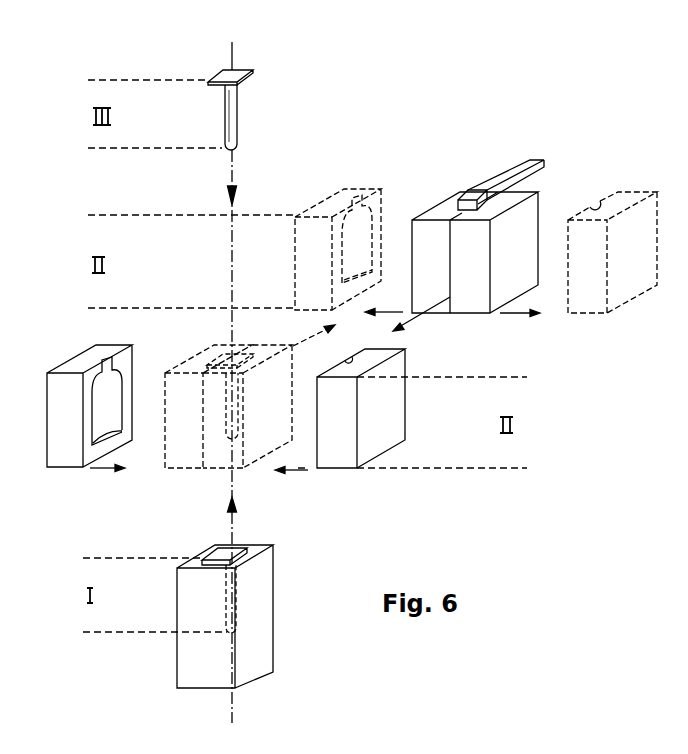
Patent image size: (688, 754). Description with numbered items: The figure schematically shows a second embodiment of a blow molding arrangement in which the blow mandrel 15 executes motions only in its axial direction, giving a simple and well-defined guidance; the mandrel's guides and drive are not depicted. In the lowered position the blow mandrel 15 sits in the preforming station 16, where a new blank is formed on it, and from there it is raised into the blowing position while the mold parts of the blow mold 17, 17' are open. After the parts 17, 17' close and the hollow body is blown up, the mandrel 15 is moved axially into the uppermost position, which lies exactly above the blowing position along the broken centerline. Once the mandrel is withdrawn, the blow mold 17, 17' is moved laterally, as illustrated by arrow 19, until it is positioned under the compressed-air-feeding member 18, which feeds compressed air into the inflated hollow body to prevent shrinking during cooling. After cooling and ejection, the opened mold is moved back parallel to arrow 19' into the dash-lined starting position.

The blow mandrel 15 is at (238, 77).
The preforming station 16 is at (265, 645).
The mold part of the blow mold 17 is at (149, 425).
The mold part of the blow mold 17' is at (304, 425).
The compressed-air-feeding member 18 is at (508, 178).
The arrow 19 is at (301, 331).
The arrow 19' is at (430, 322).